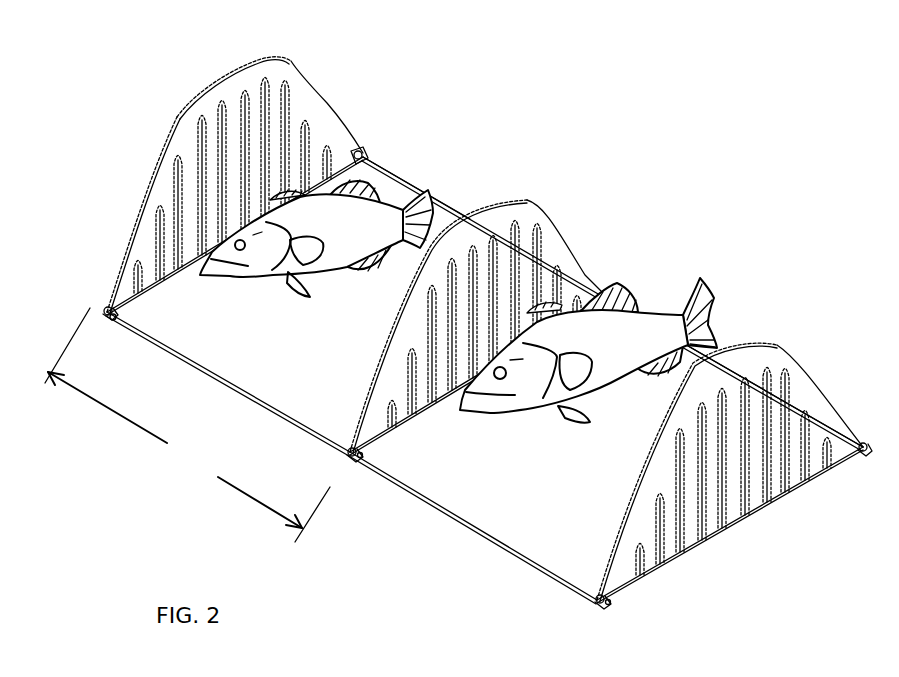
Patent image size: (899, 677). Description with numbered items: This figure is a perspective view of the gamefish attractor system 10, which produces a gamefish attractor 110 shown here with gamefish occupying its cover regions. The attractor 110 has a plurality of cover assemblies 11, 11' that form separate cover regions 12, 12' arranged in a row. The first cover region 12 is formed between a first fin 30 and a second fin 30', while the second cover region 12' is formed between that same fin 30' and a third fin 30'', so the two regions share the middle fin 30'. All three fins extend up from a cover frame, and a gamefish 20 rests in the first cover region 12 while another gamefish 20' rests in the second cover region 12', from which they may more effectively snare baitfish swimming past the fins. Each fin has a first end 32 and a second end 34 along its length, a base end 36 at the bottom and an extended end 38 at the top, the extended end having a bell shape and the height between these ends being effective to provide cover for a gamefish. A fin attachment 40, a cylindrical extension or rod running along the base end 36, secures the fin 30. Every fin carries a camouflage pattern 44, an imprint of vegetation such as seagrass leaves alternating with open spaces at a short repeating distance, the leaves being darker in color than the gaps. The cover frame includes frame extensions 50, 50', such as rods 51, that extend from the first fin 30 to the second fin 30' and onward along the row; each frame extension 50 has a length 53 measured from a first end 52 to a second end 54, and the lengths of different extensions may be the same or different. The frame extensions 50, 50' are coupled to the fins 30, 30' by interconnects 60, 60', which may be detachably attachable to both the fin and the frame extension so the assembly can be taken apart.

The gamefish attractor system 10 is at (157, 86).
The gamefish attractor 110 is at (177, 119).
The first fin 30 is at (200, 186).
The second fin 30' is at (442, 327).
The third fin 30'' is at (696, 473).
The first end 32 is at (101, 306).
The second end 34 is at (365, 172).
The base end 36 is at (352, 145).
The extended end 38 is at (251, 60).
The fin attachment 40 is at (131, 272).
The camouflage pattern 44 is at (223, 123).
The frame extension 50 is at (352, 458).
The frame extension 50' is at (613, 287).
The rod 51 is at (222, 368).
The first end 52 is at (118, 320).
The length 53 is at (187, 425).
The second end 54 is at (338, 448).
The interconnect 60 is at (80, 271).
The interconnect 60' is at (376, 117).
The cover assembly 11 is at (483, 192).
The first cover region 12 is at (421, 143).
The cover assembly 11' is at (720, 311).
The second cover region 12' is at (698, 324).
The gamefish 20 is at (316, 263).
The gamefish 20' is at (562, 375).